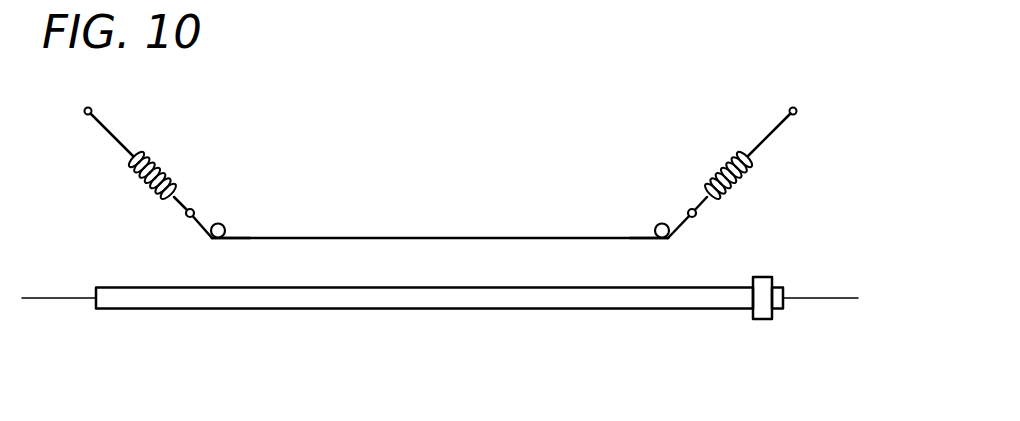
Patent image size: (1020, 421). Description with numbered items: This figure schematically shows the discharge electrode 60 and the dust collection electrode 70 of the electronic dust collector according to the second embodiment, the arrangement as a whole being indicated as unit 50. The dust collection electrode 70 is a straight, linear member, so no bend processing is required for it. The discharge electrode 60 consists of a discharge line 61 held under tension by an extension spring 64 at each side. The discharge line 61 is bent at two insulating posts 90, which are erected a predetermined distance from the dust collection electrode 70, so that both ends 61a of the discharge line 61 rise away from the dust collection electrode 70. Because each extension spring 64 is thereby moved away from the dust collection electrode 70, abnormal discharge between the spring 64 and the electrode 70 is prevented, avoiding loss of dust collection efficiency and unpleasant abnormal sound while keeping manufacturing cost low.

The transfer unit 50 is at (285, 127).
The discharge electrode 60 is at (513, 228).
The discharge line 61 is at (435, 237).
The ends of discharge line 61a is at (238, 237).
The extension spring 64 is at (136, 178).
The dust collection electrode 70 is at (468, 309).
The insulating post 90 is at (223, 223).